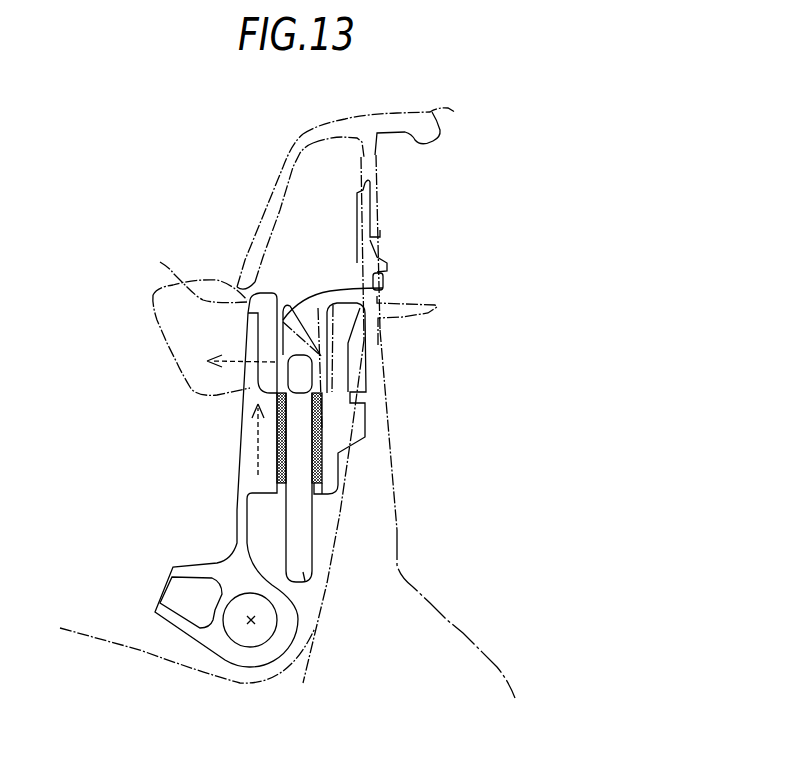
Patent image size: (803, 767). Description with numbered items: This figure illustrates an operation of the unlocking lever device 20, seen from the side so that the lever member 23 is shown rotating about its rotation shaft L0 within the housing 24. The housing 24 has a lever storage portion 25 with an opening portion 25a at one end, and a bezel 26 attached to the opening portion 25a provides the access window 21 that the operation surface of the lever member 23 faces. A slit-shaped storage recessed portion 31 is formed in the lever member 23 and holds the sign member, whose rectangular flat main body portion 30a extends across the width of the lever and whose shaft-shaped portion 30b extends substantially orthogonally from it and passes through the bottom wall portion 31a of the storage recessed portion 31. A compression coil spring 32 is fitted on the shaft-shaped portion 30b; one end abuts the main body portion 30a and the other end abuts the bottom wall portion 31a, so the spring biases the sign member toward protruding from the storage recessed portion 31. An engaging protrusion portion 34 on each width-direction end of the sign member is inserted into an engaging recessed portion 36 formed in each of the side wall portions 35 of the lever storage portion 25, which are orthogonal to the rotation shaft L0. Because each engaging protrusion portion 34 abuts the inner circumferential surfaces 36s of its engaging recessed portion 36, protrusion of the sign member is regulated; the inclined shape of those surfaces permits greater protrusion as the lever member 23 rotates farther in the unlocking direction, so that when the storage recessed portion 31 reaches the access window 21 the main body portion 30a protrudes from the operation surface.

The unlocking lever device 20 is at (606, 190).
The access window 21 is at (237, 283).
The lever member 23 is at (237, 483).
The housing 24 is at (460, 514).
The lever storage portion 25 is at (394, 488).
The opening portion 25a is at (377, 170).
The bezel 26 is at (455, 112).
The main body portion 30a is at (383, 288).
The shaft-shaped portion 30b is at (307, 584).
The storage recessed portion 31 is at (286, 305).
The bottom wall portion 31a is at (322, 494).
The compression coil spring 32 is at (322, 422).
The engaging protrusion portion 34 is at (312, 362).
The side wall portions 35 is at (175, 481).
The engaging recessed portion 36 is at (177, 366).
The inner circumferential surfaces 36s is at (160, 262).
The rotation shaft L0 is at (333, 529).